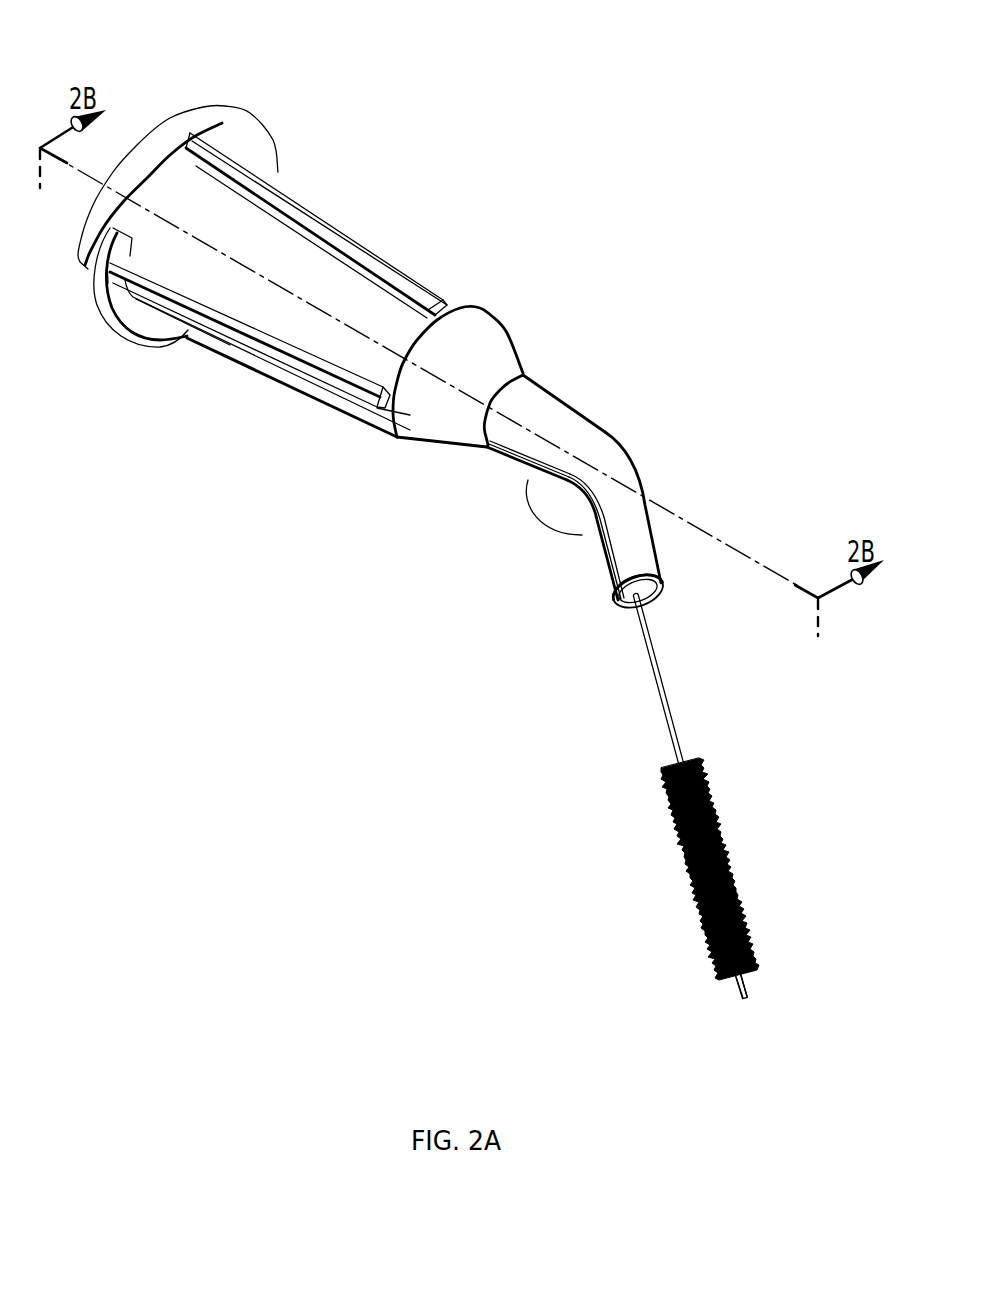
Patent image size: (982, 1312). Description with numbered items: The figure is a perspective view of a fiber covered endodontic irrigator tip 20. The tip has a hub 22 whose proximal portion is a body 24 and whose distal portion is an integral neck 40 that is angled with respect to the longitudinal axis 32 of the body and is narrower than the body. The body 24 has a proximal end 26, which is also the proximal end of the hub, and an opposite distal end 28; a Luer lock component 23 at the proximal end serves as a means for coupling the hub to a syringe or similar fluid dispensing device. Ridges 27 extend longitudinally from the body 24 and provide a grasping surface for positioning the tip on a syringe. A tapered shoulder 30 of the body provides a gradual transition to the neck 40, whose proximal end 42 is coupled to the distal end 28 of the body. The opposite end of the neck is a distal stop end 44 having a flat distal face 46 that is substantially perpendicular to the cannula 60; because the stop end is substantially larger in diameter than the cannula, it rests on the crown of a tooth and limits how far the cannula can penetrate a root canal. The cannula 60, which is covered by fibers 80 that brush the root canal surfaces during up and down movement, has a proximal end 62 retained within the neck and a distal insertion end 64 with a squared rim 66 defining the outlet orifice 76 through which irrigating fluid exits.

The endodontic irrigator tip 20 is at (590, 167).
The hub 22 is at (377, 189).
The Luer lock component 23 is at (205, 104).
The body 24 is at (370, 317).
The proximal end 26 is at (150, 357).
The ridges 27 is at (313, 236).
The distal end 28 is at (529, 379).
The shoulder 30 is at (484, 350).
The longitudinal axis 32 is at (170, 224).
The neck 40 is at (628, 441).
The proximal end 42 is at (537, 393).
The distal stop end 44 is at (662, 582).
The flat distal face 46 is at (617, 603).
The cannula 60 is at (660, 705).
The proximal end 62 is at (631, 606).
The distal insertion end 64 is at (754, 986).
The squared rim 66 is at (744, 994).
The outlet orifice 76 is at (750, 998).
The fibers 80 is at (716, 812).